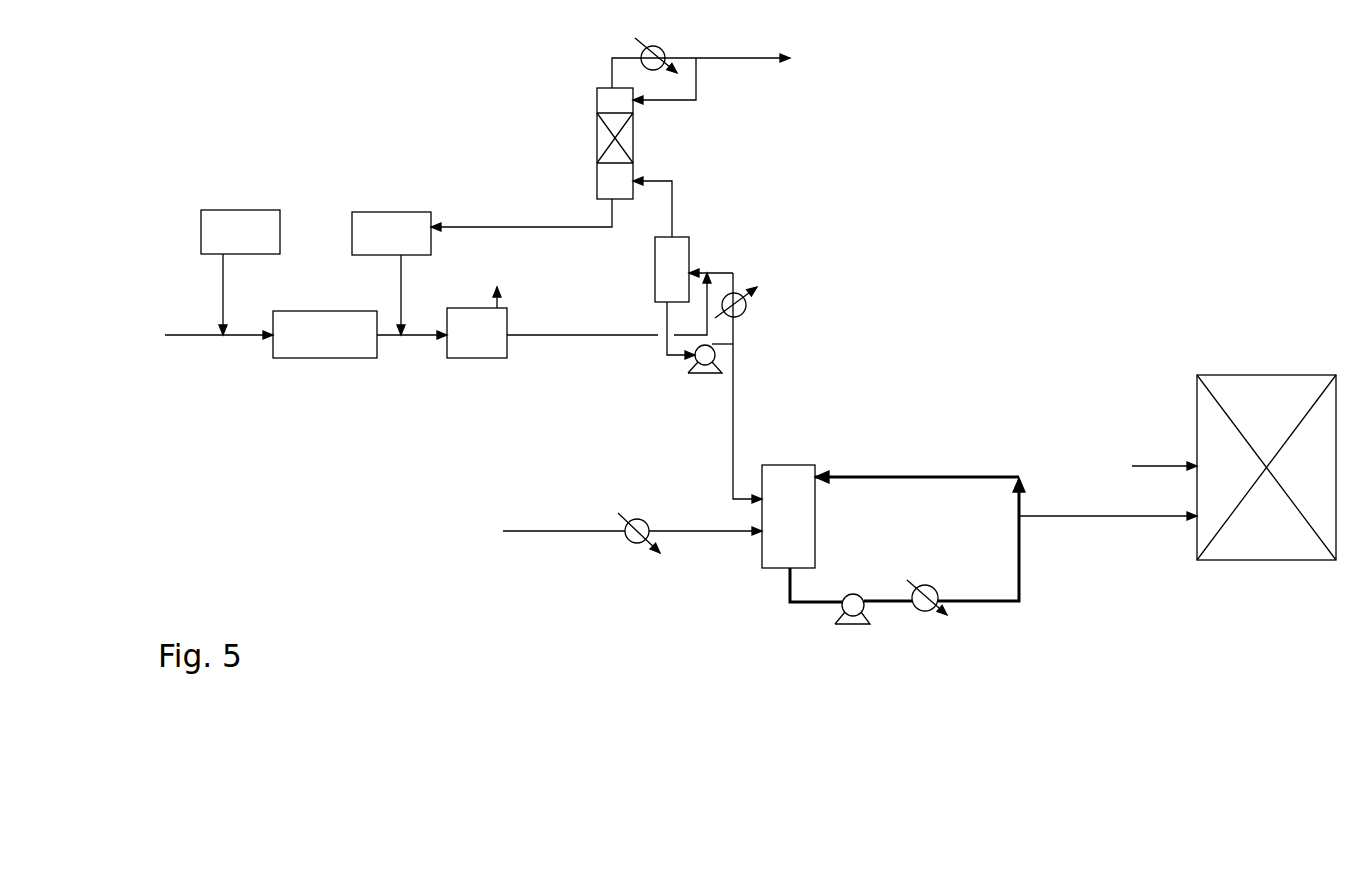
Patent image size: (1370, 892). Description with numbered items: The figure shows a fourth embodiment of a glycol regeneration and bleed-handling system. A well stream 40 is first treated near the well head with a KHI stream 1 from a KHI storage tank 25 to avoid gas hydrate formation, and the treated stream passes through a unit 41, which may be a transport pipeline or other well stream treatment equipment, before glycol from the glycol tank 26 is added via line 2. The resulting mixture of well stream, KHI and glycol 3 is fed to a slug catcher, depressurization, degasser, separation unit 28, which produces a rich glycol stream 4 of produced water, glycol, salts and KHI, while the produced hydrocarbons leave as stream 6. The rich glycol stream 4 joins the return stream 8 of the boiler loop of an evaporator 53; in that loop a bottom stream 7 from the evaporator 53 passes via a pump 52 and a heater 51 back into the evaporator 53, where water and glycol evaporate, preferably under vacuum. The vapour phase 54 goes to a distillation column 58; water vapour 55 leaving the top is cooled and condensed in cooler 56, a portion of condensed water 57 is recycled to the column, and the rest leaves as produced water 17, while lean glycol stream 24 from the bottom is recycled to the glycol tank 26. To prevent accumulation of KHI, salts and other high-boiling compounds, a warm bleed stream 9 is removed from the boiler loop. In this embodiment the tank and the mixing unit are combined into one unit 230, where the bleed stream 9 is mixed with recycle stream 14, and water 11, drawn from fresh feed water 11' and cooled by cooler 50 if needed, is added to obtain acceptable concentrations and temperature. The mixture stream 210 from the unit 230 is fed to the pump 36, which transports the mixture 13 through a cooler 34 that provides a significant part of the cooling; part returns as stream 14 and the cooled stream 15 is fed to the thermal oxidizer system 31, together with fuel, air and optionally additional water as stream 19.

The KHI stream 1 is at (217, 294).
The line 2 is at (395, 295).
The mixture of the well stream, KHI and glycol 3 is at (412, 351).
The rich glycol stream 4 is at (609, 322).
The stream 6 is at (505, 287).
The bottom stream 7 is at (679, 345).
The return stream 8 is at (716, 263).
The bleed stream 9 is at (747, 388).
The water 11 is at (705, 517).
The fresh feed water 11' is at (561, 516).
The mixture 13 is at (944, 539).
The stream 14 is at (917, 465).
The stream 15 is at (1108, 531).
The produced water 17 is at (769, 42).
The stream 19 is at (1164, 451).
The lean glycol stream 24 is at (521, 215).
The KHI storage tank 25 is at (240, 232).
The glycol tank 26 is at (391, 234).
The slug catcher, depressurization, degasser, separation unit 28 is at (477, 333).
The thermal oxidizer system 31 is at (1266, 467).
The cooler 34 is at (928, 615).
The pump 36 is at (849, 626).
The well stream 40 is at (203, 355).
The unit 41 is at (325, 334).
The cooler 50 is at (639, 544).
The heater 51 is at (750, 311).
The pump 52 is at (710, 374).
The evaporator 53 is at (656, 269).
The vapour phase 54 is at (673, 205).
The water vapour 55 is at (684, 64).
The cooler 56 is at (656, 42).
The condensed water 57 is at (676, 95).
The distillation column 58 is at (599, 143).
The mixture stream 210 is at (788, 596).
The combined tank and mixing unit 230 is at (788, 516).